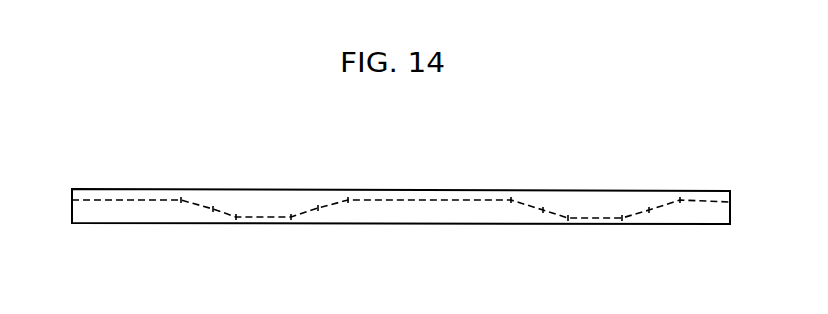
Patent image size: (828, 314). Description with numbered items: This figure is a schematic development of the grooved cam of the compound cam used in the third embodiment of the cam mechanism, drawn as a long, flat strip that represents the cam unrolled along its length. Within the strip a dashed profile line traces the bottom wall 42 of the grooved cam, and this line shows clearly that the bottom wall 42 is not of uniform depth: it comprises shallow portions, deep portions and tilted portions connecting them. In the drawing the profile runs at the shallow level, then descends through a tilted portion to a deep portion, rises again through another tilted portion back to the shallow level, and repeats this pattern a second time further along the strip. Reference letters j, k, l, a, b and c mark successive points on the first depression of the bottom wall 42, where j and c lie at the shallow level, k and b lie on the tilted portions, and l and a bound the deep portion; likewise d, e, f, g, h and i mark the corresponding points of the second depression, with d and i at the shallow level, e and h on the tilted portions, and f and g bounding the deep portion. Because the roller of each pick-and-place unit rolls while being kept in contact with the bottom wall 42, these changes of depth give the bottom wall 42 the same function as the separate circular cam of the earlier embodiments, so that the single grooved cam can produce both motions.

The bottom wall 42 is at (120, 200).
The profile point a is at (291, 217).
The profile point b is at (318, 208).
The profile point c is at (348, 200).
The profile point d is at (511, 200).
The profile point e is at (543, 210).
The profile point f is at (568, 218).
The profile point g is at (622, 218).
The profile point h is at (649, 210).
The profile point i is at (680, 200).
The profile point j is at (181, 200).
The profile point k is at (213, 209).
The profile point l is at (236, 217).